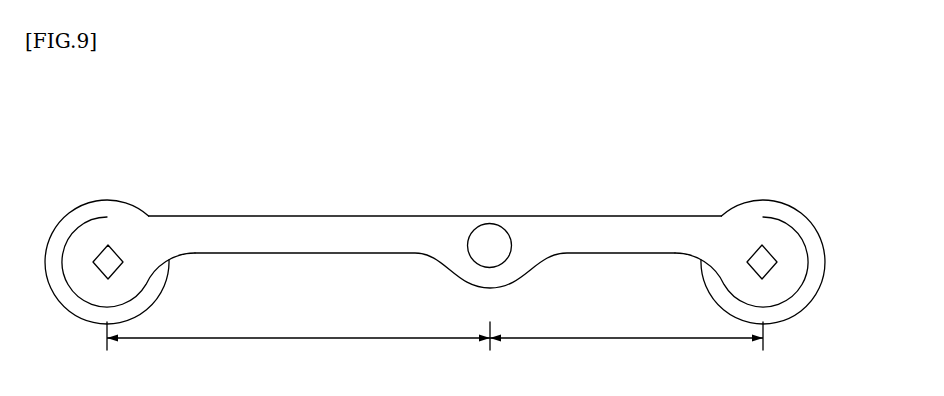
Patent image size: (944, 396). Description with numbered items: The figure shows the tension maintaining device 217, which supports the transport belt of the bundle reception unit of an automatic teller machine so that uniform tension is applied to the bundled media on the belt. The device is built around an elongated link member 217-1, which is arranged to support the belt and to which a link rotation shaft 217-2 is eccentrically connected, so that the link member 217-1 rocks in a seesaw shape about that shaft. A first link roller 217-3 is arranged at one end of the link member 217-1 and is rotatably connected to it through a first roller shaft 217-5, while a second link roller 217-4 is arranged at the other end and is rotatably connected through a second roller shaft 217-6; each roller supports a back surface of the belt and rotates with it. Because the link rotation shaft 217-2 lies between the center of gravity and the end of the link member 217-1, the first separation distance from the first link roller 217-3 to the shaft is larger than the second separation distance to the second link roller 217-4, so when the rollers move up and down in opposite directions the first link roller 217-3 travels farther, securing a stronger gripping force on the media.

The tension maintaining device 217 is at (467, 123).
The link member 217-1 is at (373, 235).
The link rotation shaft 217-2 is at (488, 245).
The first link roller 217-3 is at (165, 279).
The second link roller 217-4 is at (702, 278).
The first roller shaft 217-5 is at (108, 260).
The second roller shaft 217-6 is at (763, 260).